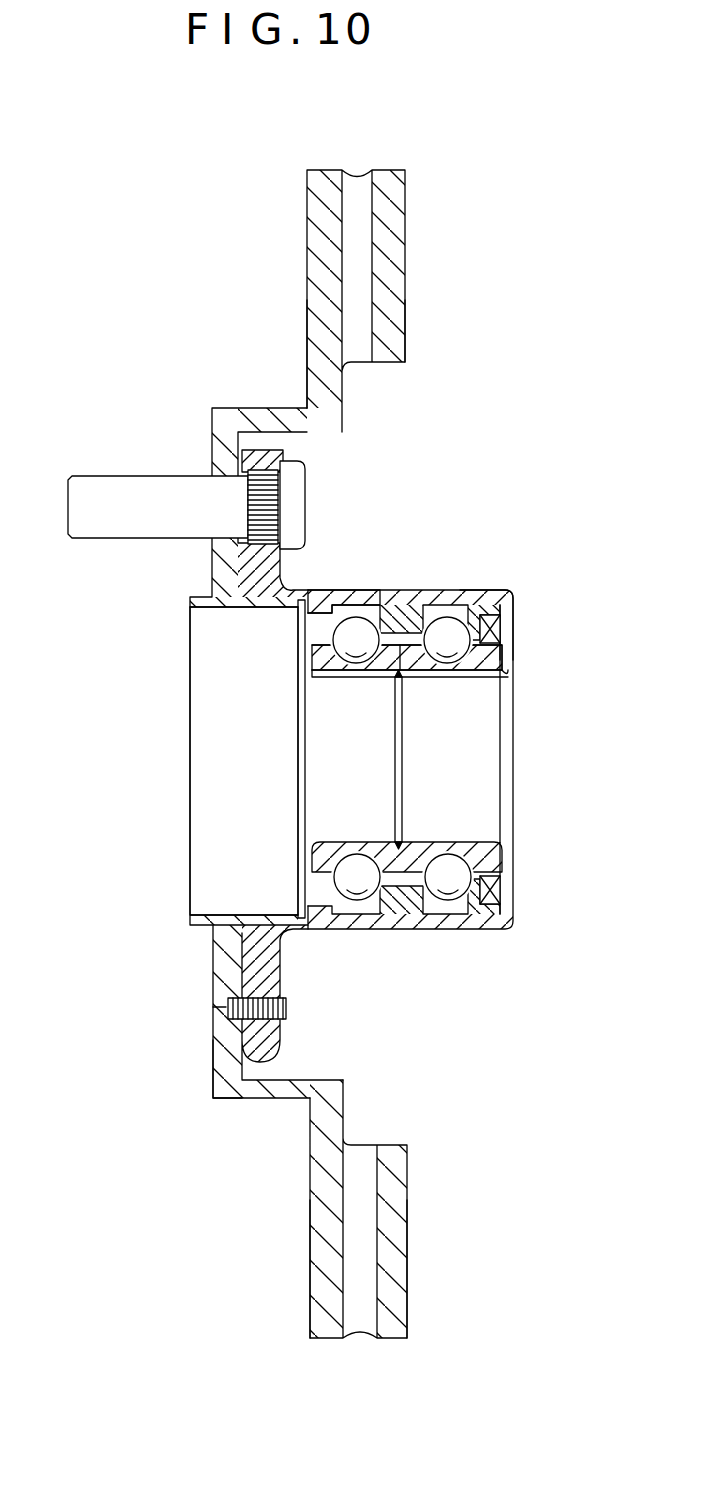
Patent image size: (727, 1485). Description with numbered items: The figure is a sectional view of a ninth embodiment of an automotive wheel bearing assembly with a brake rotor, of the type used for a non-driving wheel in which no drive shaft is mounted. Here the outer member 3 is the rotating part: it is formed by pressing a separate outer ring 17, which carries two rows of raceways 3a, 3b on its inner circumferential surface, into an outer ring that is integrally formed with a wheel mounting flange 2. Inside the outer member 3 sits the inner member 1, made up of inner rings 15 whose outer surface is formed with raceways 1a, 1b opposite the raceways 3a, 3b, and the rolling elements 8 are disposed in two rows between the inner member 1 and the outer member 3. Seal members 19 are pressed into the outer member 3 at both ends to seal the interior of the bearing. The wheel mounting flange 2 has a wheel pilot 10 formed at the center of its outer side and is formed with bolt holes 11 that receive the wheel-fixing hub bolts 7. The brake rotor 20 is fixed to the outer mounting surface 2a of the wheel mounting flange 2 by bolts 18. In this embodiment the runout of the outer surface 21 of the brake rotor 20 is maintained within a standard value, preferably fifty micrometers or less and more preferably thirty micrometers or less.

The inner member 1 is at (305, 655).
The raceway 1a is at (344, 678).
The raceway 1b is at (466, 683).
The wheel mounting flange 2 is at (262, 1042).
The outer mounting surface 2a is at (213, 1043).
The outer member 3 is at (488, 586).
The raceway 3a is at (344, 620).
The raceway 3b is at (505, 600).
The hub bolt 7 is at (132, 495).
The rolling elements 8 is at (412, 667).
The wheel pilot 10 is at (205, 928).
The bolt hole 11 is at (262, 508).
The inner rings 15 is at (508, 680).
The outer ring 17 is at (428, 607).
The bolt 18 is at (222, 1005).
The seal member 19 is at (500, 631).
The brake rotor 20 is at (318, 1222).
The outer surface 21 is at (408, 1272).